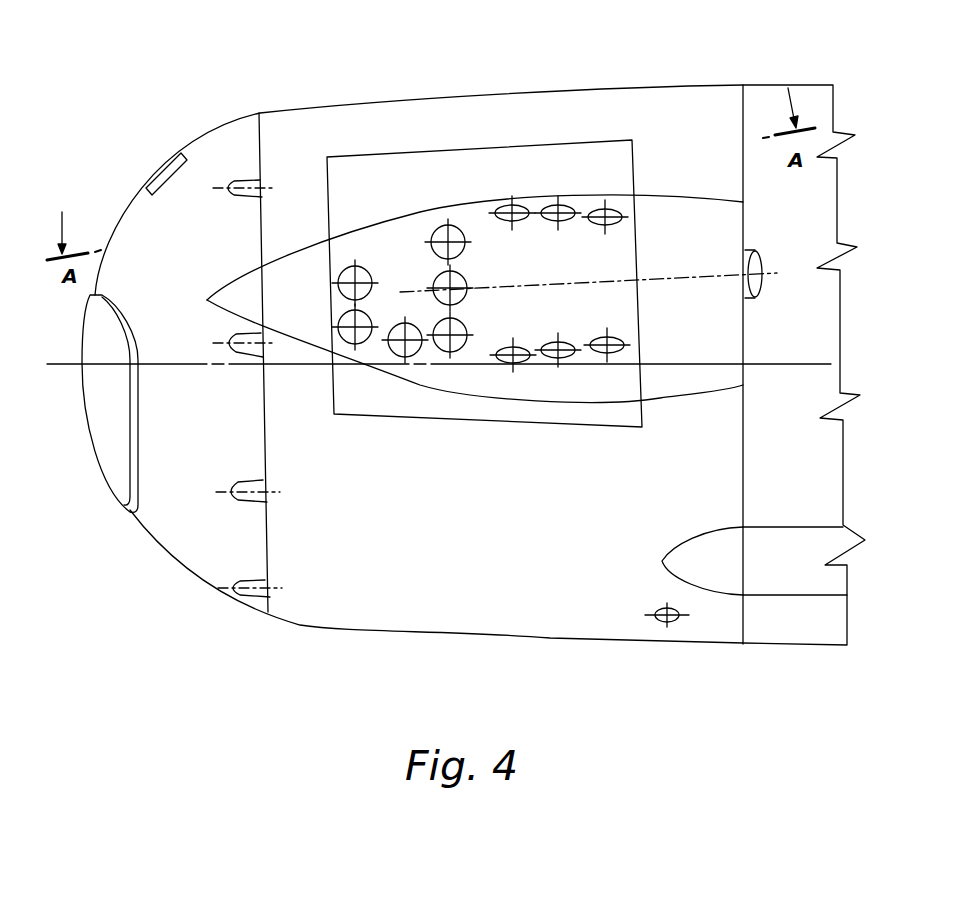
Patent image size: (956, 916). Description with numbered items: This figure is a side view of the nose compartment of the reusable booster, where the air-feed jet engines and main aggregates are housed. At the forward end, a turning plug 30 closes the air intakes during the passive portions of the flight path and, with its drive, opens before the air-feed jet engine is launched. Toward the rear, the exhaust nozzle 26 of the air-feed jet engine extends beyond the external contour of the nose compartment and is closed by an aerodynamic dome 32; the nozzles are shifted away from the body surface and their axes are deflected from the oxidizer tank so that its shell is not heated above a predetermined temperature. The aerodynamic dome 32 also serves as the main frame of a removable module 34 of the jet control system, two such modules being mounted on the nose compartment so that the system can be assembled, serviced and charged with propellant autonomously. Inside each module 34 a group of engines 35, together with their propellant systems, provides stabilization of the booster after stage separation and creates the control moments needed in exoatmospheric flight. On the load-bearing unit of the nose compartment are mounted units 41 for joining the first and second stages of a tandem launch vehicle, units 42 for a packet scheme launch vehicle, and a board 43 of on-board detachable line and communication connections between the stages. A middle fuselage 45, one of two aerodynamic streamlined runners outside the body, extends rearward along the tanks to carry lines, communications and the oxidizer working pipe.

The exhaust nozzle 26 is at (747, 245).
The turning plug 30 is at (112, 432).
The aerodynamic dome 32 is at (687, 223).
The removable module 34 is at (475, 222).
The group of engines 35 is at (413, 347).
The units for joining the first and second stages 41 is at (240, 347).
The units for a packet scheme launch vehicle 42 is at (662, 622).
The board of on-board detachable connections 43 is at (158, 177).
The middle fuselage 45 is at (798, 578).